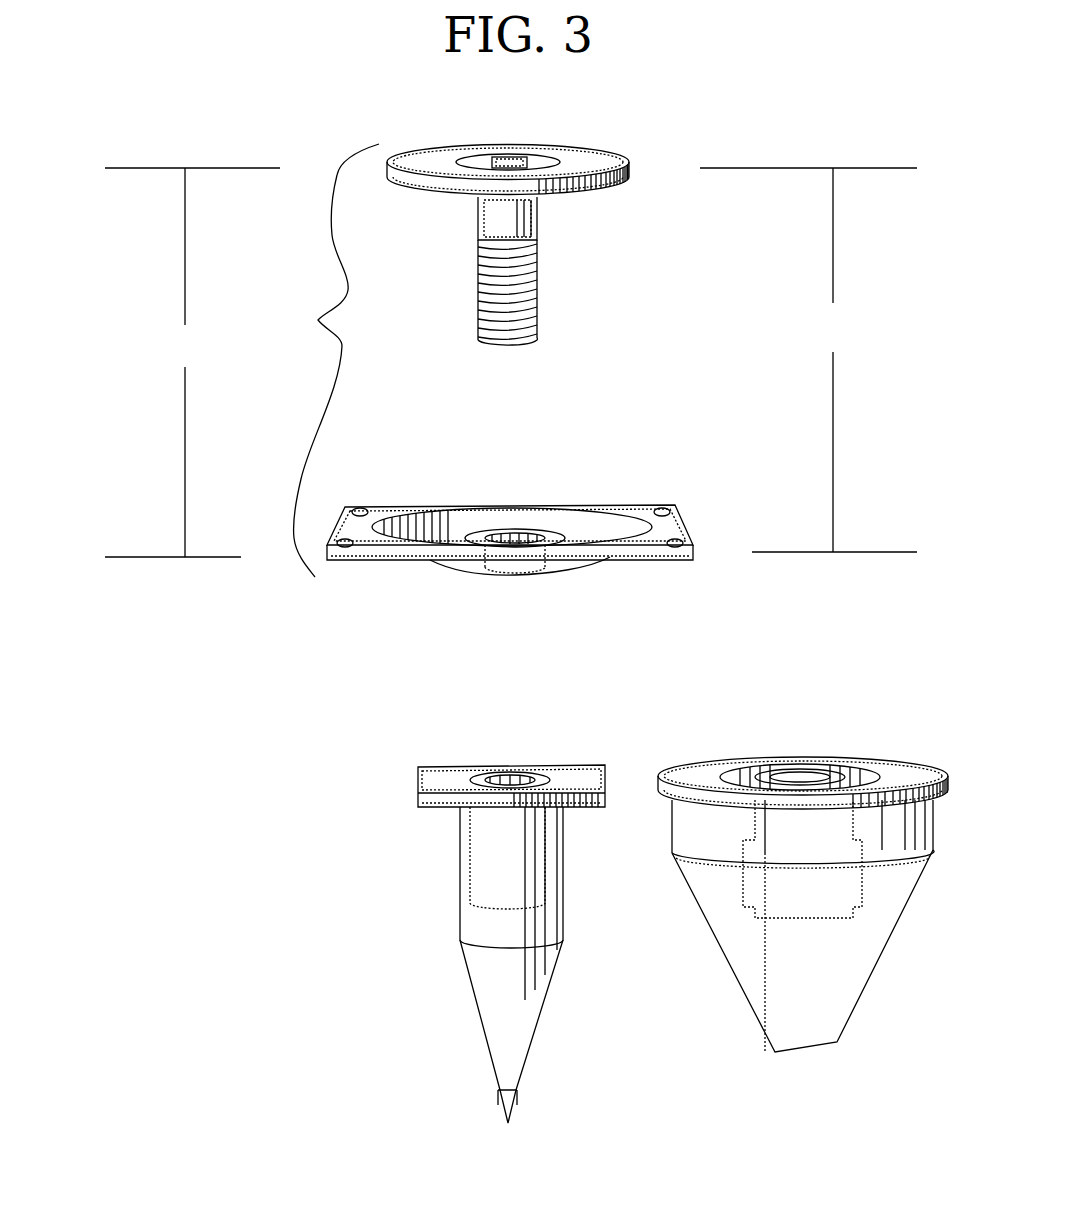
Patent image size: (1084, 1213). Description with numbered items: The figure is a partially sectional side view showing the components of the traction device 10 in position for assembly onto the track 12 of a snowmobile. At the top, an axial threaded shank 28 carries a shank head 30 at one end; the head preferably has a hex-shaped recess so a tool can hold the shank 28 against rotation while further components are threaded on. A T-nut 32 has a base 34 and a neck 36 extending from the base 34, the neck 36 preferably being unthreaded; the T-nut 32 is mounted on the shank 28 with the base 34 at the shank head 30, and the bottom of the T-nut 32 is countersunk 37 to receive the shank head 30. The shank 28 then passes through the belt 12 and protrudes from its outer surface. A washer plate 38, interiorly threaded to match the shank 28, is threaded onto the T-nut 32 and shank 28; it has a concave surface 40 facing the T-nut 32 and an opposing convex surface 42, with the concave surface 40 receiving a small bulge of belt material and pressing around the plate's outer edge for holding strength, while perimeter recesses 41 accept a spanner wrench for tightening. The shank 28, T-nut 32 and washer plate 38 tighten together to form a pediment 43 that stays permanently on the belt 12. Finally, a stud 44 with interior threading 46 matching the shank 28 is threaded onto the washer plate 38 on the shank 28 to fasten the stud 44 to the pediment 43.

The traction device 10 is at (268, 763).
The track 12 is at (511, 362).
The axial threaded shank 28 is at (537, 298).
The shank head 30 is at (535, 152).
The T-nut 32 is at (637, 157).
The base 34 is at (582, 162).
The neck 36 is at (537, 225).
The countersunk surface 37 is at (423, 148).
The washer plate 38 is at (623, 563).
The concave surface 40 is at (563, 530).
The perimeter recesses 41 is at (327, 522).
The convex surface 42 is at (497, 573).
The pediment 43 is at (318, 319).
The stud 44 is at (742, 983).
The interior threading 46 is at (513, 903).